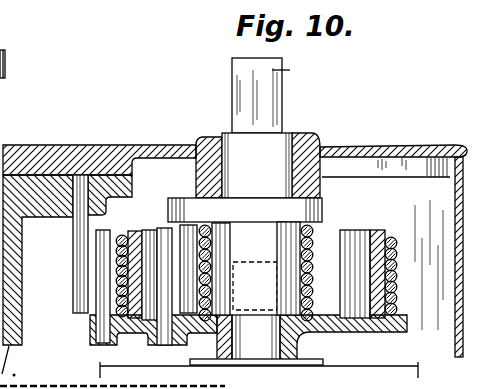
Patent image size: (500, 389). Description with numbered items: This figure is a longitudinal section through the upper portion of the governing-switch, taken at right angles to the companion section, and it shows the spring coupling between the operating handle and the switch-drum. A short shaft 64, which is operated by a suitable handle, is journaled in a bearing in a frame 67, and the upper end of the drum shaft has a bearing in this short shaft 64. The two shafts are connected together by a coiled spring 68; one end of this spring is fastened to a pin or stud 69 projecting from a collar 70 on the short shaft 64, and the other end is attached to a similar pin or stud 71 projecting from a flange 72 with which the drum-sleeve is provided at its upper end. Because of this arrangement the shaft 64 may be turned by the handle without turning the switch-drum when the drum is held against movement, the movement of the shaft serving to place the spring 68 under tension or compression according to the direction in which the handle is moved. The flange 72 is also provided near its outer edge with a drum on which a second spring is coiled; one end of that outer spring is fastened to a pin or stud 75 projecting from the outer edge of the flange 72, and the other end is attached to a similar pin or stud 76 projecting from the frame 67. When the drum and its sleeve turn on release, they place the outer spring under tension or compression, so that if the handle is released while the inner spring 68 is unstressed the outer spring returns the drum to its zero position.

The short shaft 64 is at (257, 209).
The frame 67 is at (96, 140).
The coiled spring 68 is at (314, 268).
The pin or stud 69 is at (186, 249).
The collar 70 is at (245, 211).
The pin or stud 71 is at (158, 228).
The flange 72 is at (250, 194).
The pin or stud 75 is at (107, 305).
The pin or stud 76 is at (73, 270).